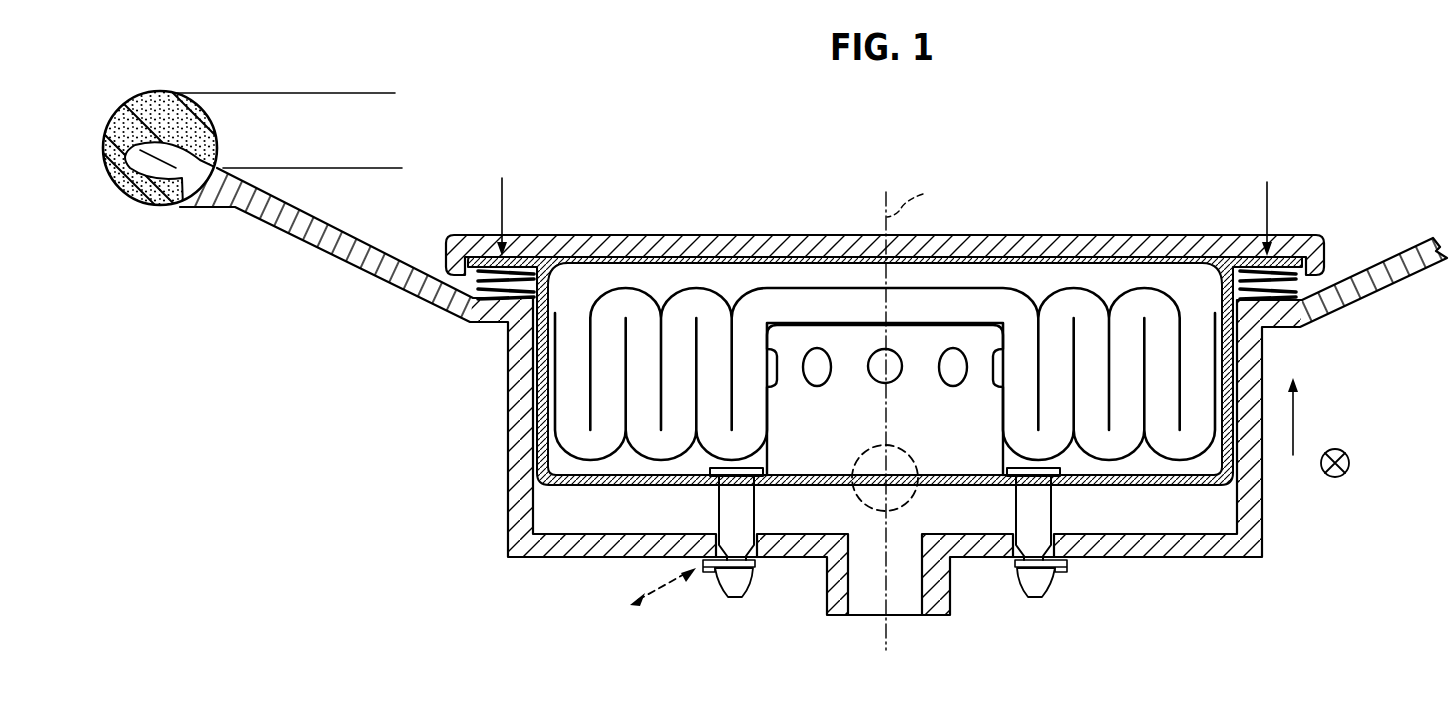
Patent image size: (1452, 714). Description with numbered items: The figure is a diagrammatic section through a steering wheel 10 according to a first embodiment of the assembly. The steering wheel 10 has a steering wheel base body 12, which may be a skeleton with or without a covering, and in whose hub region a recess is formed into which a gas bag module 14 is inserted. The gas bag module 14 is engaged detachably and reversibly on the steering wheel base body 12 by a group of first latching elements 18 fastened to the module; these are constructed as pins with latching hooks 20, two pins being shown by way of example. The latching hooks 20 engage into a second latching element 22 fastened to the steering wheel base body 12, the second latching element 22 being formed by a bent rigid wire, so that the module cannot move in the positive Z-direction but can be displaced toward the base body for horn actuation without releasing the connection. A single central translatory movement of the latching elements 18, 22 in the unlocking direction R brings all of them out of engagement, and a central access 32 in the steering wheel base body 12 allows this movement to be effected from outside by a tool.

The steering wheel 10 is at (588, 122).
The steering wheel base body 12 is at (520, 513).
The gas bag module 14 is at (1066, 228).
The first latching element 18 is at (727, 512).
The latching hook 20 is at (738, 597).
The second latching element 22 is at (716, 569).
The central access 32 is at (897, 508).